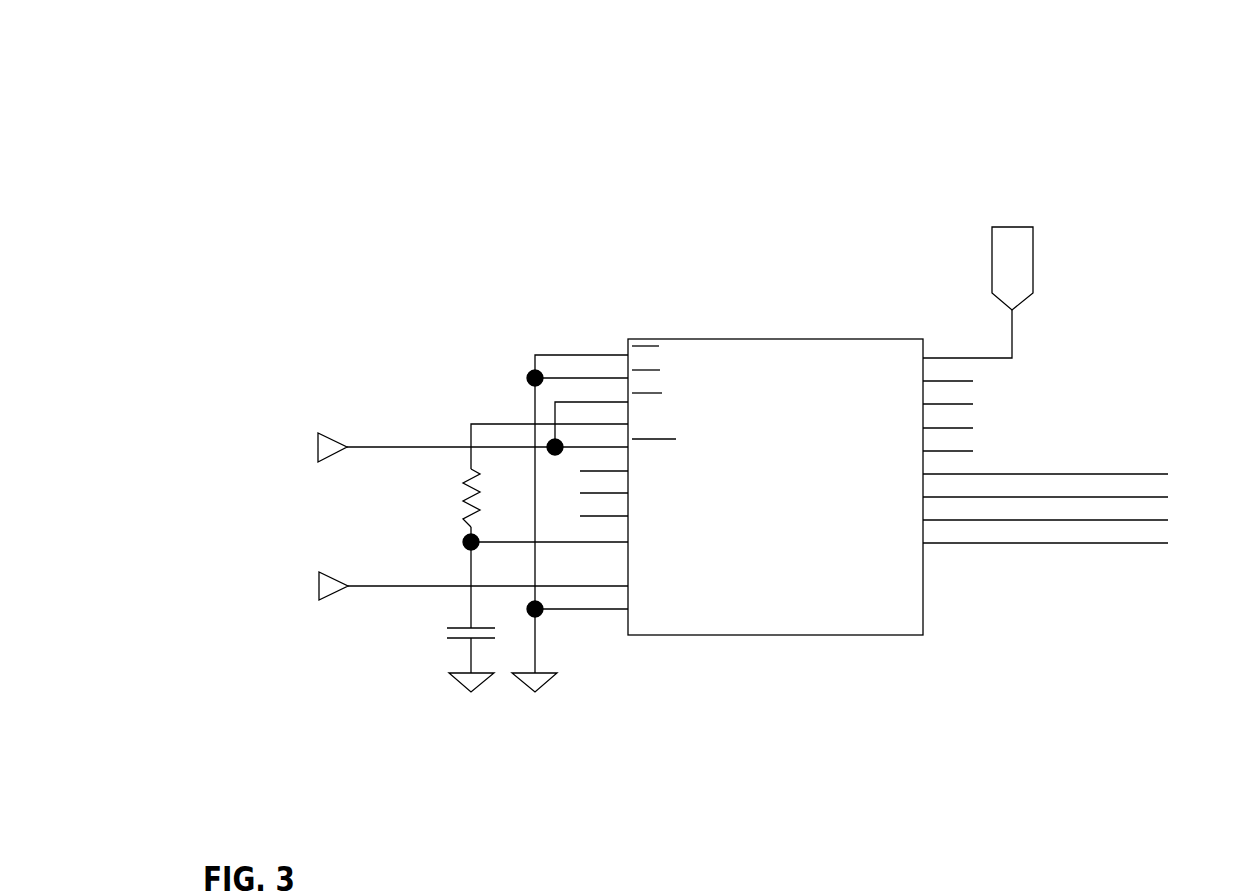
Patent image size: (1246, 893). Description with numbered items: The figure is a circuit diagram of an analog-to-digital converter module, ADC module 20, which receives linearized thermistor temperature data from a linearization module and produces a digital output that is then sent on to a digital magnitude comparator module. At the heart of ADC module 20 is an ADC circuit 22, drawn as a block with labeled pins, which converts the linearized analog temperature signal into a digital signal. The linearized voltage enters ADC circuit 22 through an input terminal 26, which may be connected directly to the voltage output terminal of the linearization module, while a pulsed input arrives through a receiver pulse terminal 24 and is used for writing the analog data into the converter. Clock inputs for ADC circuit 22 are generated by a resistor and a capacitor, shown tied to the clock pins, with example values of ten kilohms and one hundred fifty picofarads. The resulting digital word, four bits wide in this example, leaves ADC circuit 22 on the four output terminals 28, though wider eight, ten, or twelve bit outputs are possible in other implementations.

The ADC module 20 is at (719, 417).
The ADC circuit 22 is at (806, 419).
The receiver pulse terminal 24 is at (428, 380).
The input terminal 26 is at (437, 675).
The output terminals 28 is at (1066, 608).